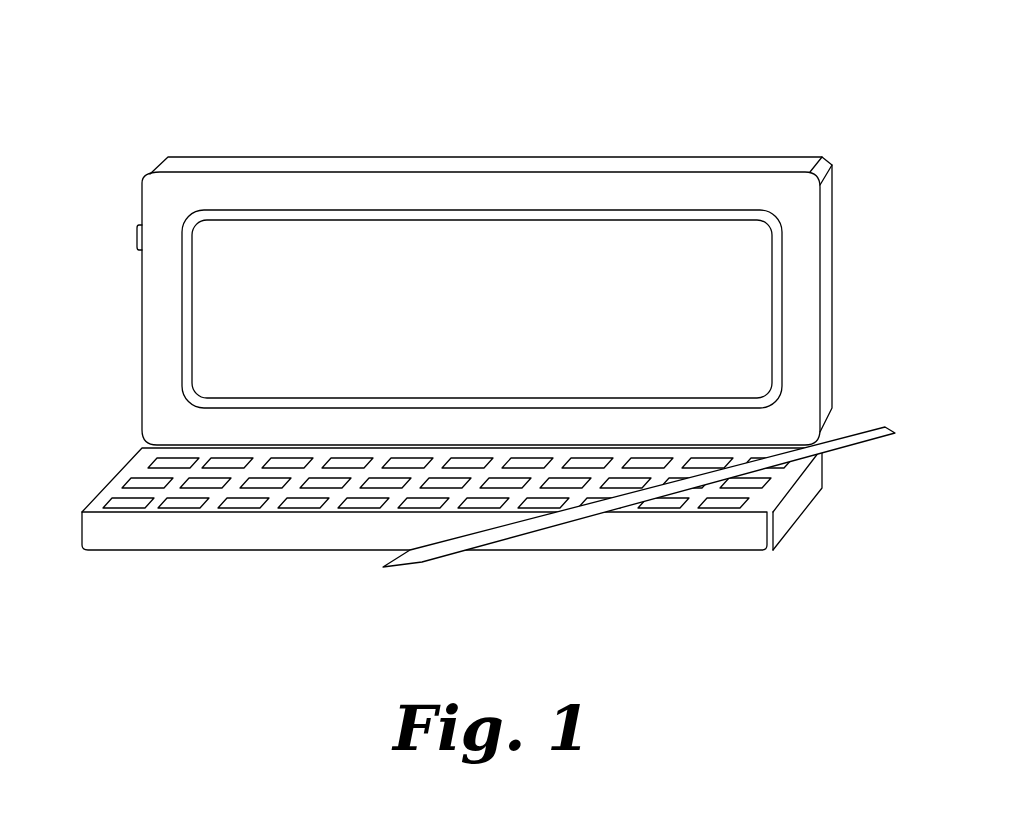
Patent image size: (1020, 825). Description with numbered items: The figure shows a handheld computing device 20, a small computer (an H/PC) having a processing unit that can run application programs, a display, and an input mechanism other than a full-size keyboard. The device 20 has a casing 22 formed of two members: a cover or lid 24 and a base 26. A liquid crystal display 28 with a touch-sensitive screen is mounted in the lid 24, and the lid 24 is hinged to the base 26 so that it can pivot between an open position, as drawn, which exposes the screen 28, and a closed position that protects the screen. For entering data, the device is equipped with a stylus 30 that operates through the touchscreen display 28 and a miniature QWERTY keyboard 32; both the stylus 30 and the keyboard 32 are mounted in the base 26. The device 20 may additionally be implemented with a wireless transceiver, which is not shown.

The handheld computing device 20 is at (695, 52).
The casing 22 is at (797, 508).
The lid 24 is at (655, 163).
The base 26 is at (697, 545).
The liquid crystal display 28 is at (481, 324).
The stylus 30 is at (457, 547).
The miniature QWERTY keyboard 32 is at (158, 478).